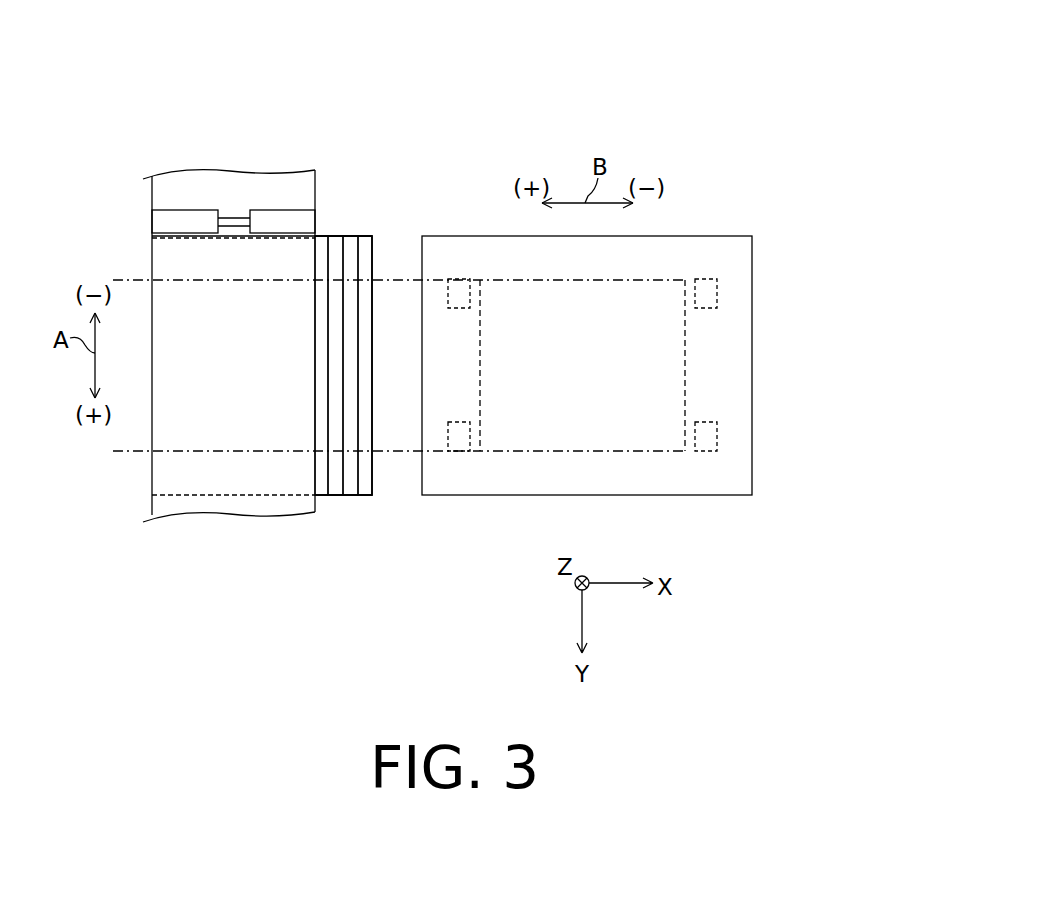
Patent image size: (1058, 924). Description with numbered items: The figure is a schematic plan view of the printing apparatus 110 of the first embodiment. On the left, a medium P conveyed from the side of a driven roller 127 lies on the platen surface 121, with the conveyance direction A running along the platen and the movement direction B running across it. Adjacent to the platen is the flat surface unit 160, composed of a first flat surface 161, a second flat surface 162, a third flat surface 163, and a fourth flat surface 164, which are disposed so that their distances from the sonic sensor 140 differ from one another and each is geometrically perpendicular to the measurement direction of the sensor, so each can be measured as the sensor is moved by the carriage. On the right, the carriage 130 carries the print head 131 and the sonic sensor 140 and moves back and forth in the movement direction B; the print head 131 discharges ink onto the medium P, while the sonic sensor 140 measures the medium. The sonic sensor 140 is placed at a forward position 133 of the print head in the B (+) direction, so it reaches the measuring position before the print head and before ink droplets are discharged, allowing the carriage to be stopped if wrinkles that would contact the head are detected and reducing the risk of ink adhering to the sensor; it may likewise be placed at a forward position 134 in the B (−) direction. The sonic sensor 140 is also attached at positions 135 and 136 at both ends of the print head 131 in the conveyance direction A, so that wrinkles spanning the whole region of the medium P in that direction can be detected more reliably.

The printing apparatus 110 is at (664, 73).
The medium P is at (188, 502).
The driven roller 127 is at (288, 210).
The platen surface 121 is at (322, 497).
The flat surface unit 160 is at (412, 75).
The first flat surface 161 is at (325, 236).
The second flat surface 162 is at (337, 236).
The third flat surface 163 is at (350, 236).
The fourth flat surface 164 is at (362, 236).
The carriage 130 is at (662, 236).
The print head 131 is at (670, 352).
The forward position 133 is at (463, 362).
The forward position 134 is at (693, 385).
The position at end of print head 135 is at (130, 452).
The position at end of print head 136 is at (130, 280).
The sonic sensor 140 is at (453, 433).